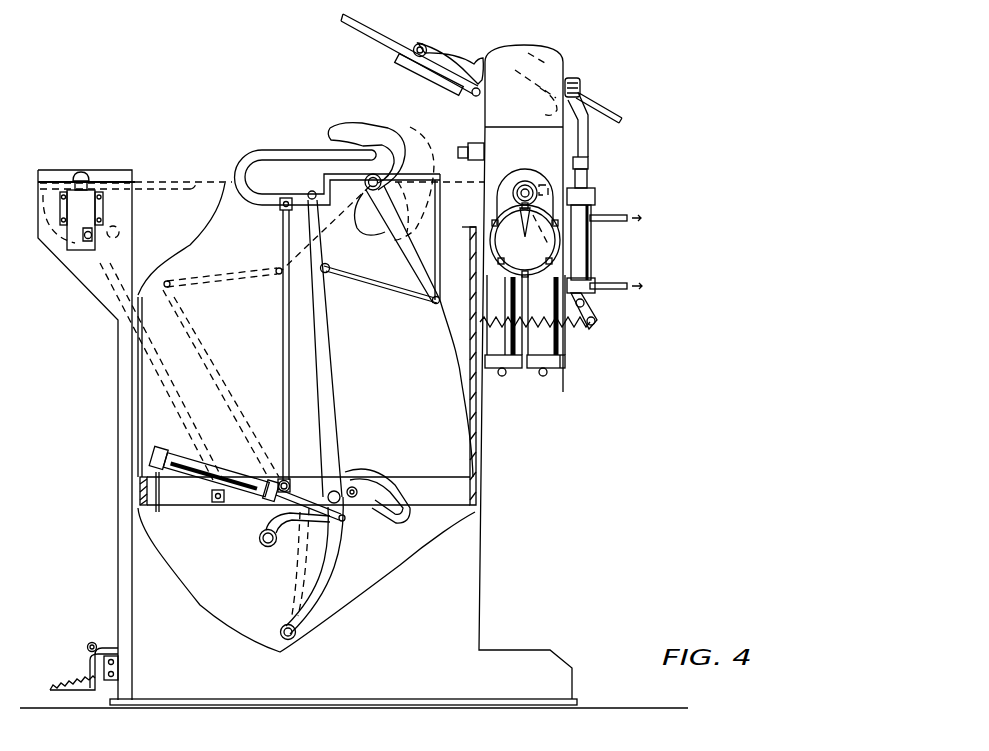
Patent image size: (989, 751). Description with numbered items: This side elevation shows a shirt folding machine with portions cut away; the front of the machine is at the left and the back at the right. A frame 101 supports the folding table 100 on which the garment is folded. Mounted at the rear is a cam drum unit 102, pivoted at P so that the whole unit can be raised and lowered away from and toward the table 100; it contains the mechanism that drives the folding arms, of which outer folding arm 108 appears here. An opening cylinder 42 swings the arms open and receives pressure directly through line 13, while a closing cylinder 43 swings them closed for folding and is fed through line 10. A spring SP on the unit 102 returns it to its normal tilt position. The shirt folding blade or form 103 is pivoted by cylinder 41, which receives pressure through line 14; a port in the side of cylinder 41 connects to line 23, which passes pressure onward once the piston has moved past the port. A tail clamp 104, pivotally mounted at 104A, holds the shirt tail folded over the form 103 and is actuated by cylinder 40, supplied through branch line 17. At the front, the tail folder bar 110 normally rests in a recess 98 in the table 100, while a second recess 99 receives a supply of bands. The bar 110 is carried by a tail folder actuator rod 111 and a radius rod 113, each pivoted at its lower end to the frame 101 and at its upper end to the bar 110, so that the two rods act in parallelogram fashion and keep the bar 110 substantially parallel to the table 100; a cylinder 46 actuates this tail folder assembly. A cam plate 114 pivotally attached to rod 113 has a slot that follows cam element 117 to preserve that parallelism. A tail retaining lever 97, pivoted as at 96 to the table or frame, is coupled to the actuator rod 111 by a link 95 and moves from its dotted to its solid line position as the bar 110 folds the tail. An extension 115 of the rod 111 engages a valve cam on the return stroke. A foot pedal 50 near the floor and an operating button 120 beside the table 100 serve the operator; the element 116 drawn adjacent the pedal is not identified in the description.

The line 10 is at (543, 378).
The line 13 is at (503, 377).
The line 14 is at (617, 283).
The branch line 17 is at (600, 106).
The line 23 is at (614, 218).
The tail clamp cylinder 40 is at (582, 86).
The cylinder 41 is at (595, 240).
The opening cylinder 42 is at (514, 377).
The closing cylinder 43 is at (566, 353).
The cylinder 46 is at (217, 478).
The foot pedal 50 is at (92, 680).
The link 95 is at (377, 288).
The pivot 96 is at (360, 244).
The tail retaining lever 97 is at (362, 128).
The recess 98 is at (194, 187).
The recess 99 is at (327, 178).
The folding table 100 is at (216, 174).
The frame 101 is at (425, 479).
The cam drum unit 102 is at (543, 56).
The shirt folding blade or form 103 is at (392, 54).
The tail clamp 104 is at (422, 47).
The pivot mounting 104A is at (411, 68).
The outer folding arm 108 is at (463, 150).
The tail folder bar 110 is at (155, 183).
The tail folder actuator rod 111 is at (323, 343).
The radius rod 113 is at (283, 320).
The cam plate 114 is at (288, 470).
The extension 115 is at (264, 540).
The bracket 116 is at (120, 672).
The cam element 117 is at (350, 470).
The operating button 120 is at (86, 172).
The pivot P is at (535, 185).
The spring SP is at (583, 324).